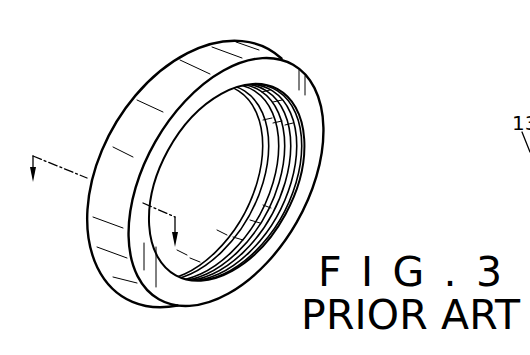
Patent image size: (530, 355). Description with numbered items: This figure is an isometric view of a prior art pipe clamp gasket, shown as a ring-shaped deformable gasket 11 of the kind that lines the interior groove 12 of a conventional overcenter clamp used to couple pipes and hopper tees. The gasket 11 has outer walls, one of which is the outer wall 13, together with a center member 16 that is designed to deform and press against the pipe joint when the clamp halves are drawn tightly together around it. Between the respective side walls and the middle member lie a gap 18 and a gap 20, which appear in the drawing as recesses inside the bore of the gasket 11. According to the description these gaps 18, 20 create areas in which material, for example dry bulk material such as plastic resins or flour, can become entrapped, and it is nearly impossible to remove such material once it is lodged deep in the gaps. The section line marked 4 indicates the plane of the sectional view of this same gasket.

The section line 4- 4 is at (111, 201).
The deformable gasket 11 is at (346, 127).
The interior groove 12 is at (288, 193).
The outer wall 13 is at (253, 157).
The center member 16 is at (257, 217).
The gap 18 is at (260, 122).
The gap 20 is at (303, 155).